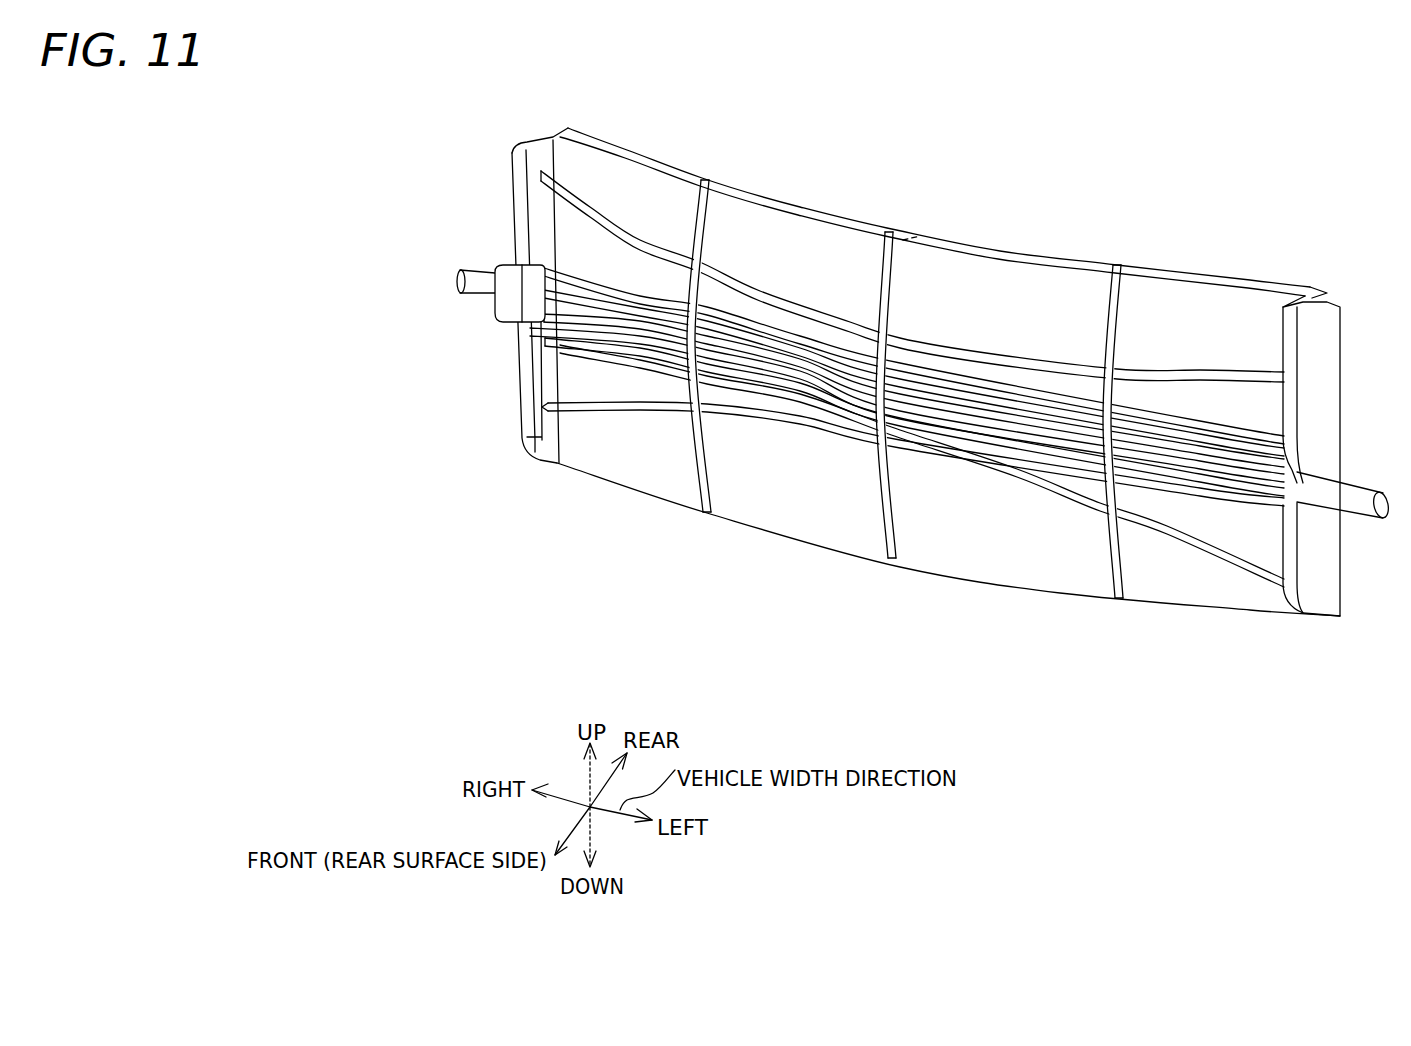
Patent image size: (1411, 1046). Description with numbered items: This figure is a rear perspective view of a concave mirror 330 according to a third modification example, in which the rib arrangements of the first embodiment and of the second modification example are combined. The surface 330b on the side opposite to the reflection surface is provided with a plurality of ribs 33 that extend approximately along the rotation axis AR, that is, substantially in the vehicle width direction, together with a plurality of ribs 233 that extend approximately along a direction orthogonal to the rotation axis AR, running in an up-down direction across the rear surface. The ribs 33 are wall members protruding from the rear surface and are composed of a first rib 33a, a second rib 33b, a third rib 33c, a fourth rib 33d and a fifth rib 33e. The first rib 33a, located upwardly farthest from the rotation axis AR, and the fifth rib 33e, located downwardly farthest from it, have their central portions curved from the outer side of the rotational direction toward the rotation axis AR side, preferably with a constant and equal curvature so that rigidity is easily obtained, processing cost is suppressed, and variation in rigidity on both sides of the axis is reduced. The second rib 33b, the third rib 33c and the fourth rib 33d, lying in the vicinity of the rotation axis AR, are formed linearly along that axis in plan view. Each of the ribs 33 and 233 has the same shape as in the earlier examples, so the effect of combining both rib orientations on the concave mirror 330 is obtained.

The concave mirror 330 is at (1222, 178).
The surface on an opposite side 330b is at (925, 536).
The ribs 233 is at (893, 320).
The ribs 33 is at (862, 405).
The first rib 33a is at (652, 237).
The second rib 33b is at (580, 270).
The third rib 33c is at (556, 345).
The fourth rib 33d is at (638, 348).
The fifth rib 33e is at (1255, 567).
The rotation axis AR is at (920, 232).